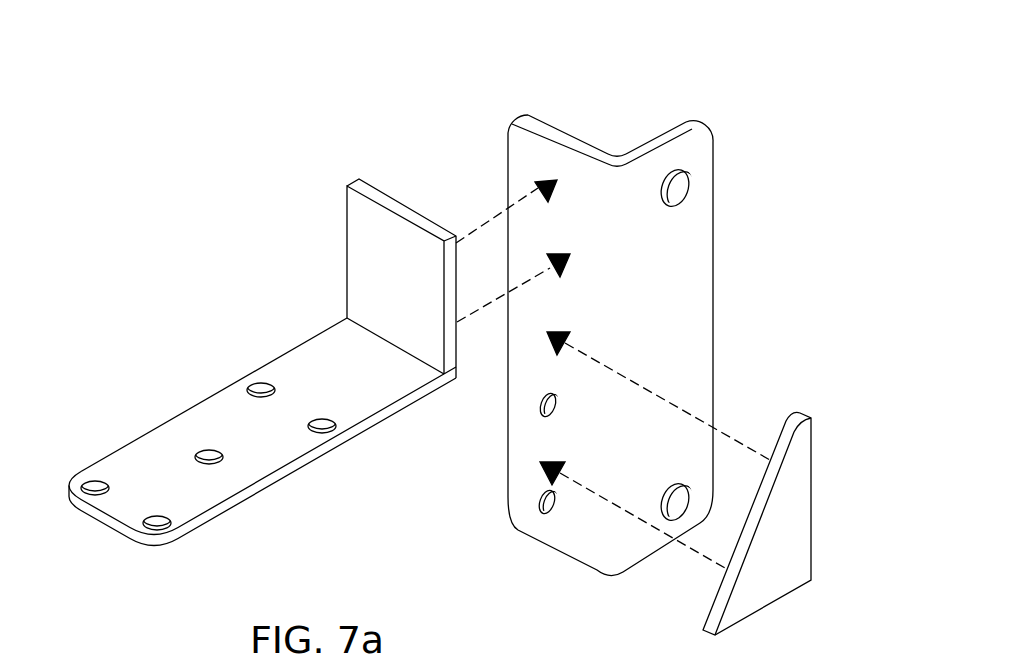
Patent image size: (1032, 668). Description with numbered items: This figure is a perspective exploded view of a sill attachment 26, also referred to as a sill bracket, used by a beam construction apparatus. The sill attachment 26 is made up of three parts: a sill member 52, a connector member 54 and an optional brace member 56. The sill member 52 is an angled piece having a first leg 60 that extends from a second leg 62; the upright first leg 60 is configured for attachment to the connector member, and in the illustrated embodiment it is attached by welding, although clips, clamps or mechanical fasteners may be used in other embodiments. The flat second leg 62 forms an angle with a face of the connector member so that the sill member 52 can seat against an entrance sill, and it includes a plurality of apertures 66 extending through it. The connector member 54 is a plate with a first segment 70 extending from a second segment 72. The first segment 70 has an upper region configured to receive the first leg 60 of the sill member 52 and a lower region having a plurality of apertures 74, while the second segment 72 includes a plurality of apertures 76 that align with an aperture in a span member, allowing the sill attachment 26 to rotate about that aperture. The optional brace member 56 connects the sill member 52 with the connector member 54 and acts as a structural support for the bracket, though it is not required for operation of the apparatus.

The sill attachment 26 is at (772, 98).
The sill member 52 is at (312, 461).
The connector member 54 is at (713, 333).
The brace member 56 is at (812, 500).
The first leg 60 is at (347, 253).
The second leg 62 is at (142, 436).
The apertures 66 is at (157, 516).
The first segment 70 is at (577, 132).
The second segment 72 is at (653, 135).
The apertures 74 is at (540, 403).
The apertures 76 is at (686, 192).